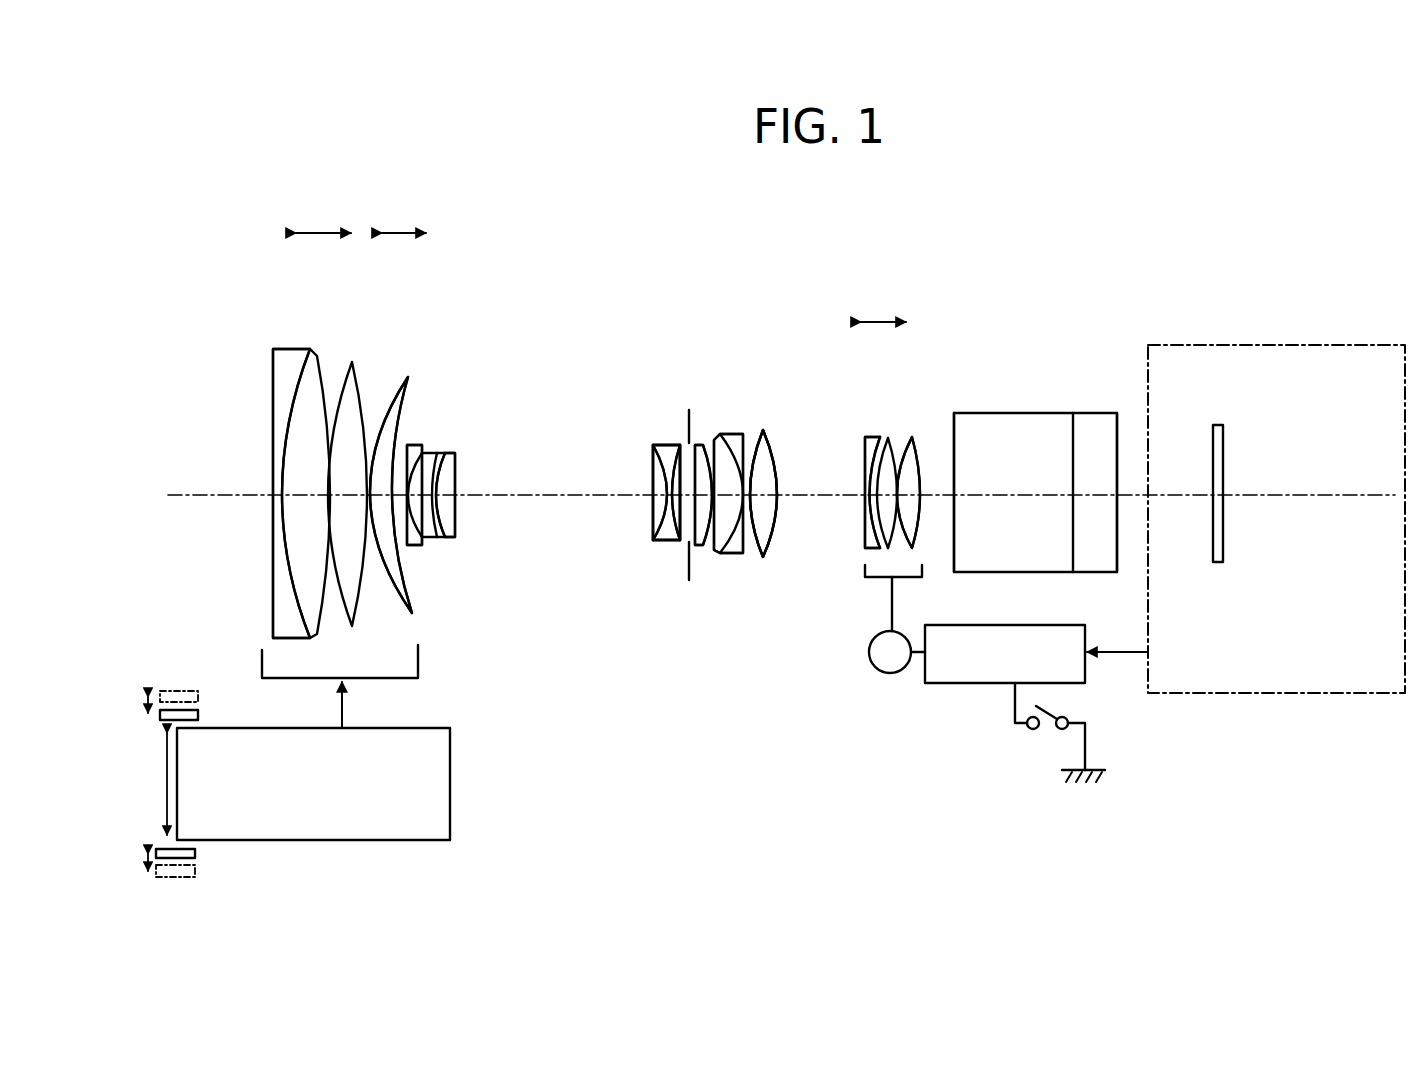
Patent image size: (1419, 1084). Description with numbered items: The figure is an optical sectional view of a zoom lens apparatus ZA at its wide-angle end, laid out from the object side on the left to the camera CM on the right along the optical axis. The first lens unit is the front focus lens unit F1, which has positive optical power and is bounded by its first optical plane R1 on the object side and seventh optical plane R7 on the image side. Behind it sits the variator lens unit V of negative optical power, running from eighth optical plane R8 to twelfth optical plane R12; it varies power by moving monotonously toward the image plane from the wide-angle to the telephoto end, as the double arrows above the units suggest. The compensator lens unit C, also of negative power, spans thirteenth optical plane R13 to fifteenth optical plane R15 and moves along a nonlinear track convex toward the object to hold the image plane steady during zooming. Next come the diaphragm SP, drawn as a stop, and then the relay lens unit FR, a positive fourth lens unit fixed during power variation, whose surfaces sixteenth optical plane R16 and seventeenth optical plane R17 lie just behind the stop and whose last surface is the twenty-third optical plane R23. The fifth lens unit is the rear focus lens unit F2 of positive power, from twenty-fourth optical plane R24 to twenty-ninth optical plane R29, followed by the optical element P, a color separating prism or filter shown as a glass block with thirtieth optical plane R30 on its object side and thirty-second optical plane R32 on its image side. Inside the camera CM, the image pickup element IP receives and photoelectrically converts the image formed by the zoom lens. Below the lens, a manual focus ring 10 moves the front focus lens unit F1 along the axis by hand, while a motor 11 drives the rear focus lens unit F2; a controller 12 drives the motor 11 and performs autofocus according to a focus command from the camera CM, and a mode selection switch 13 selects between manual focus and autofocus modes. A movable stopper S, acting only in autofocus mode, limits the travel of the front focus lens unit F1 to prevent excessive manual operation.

The front focus lens unit F1 is at (338, 358).
The first optical plane R1 is at (271, 577).
The seventh optical plane R7 is at (408, 577).
The eighth optical plane R8 is at (406, 443).
The variator lens unit V is at (438, 445).
The twelfth optical plane R12 is at (455, 515).
The compensator lens unit C is at (658, 443).
The thirteenth optical plane R13 is at (653, 458).
The fifteenth optical plane R15 is at (668, 548).
The diaphragm SP is at (693, 423).
The sixteenth optical plane R16 is at (689, 575).
The seventeenth optical plane R17 is at (702, 547).
The relay lens unit FR is at (740, 431).
The twenty-third optical plane R23 is at (775, 518).
The zoom lens apparatus ZA is at (767, 333).
The rear focus lens unit F2 is at (897, 433).
The twenty-fourth optical plane R24 is at (866, 452).
The twenty-ninth optical plane R29 is at (916, 440).
The thirtieth optical plane R30 is at (953, 420).
The optical element P is at (1022, 413).
The thirty-second optical plane R32 is at (1117, 536).
The camera CM is at (1290, 345).
The image pickup element IP is at (1218, 424).
The manual focus ring 10 is at (450, 782).
The motor 11 is at (880, 670).
The controller 12 is at (1080, 670).
The mode selection switch 13 is at (1045, 729).
The movable stopper S is at (157, 847).